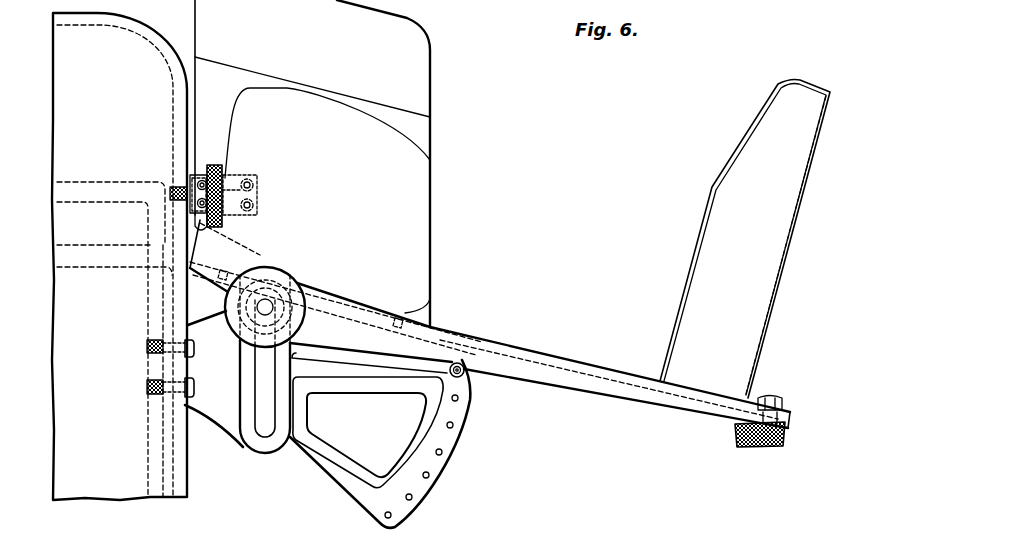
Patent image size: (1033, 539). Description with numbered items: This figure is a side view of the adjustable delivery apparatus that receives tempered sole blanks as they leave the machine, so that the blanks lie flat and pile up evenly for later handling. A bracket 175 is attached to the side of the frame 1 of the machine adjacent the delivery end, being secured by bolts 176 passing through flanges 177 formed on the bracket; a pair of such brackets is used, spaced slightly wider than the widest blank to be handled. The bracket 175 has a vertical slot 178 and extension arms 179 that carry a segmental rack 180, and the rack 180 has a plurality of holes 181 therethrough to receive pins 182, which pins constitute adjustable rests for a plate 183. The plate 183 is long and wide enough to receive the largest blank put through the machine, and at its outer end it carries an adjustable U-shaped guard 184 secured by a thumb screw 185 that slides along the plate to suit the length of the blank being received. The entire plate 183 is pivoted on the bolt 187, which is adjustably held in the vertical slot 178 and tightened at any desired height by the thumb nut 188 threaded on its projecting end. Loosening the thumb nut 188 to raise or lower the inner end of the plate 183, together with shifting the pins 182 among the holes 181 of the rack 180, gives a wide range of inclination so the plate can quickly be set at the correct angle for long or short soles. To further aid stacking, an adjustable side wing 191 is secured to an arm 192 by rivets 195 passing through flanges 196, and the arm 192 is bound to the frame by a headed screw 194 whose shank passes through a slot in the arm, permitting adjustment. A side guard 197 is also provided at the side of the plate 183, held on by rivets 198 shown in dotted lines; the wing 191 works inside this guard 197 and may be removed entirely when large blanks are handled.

The frame 1 is at (83, 487).
The brackets 175 is at (212, 405).
The bolts 176 is at (192, 348).
The flanges 177 is at (177, 398).
The vertical slot 178 is at (266, 430).
The extension arms 179 is at (359, 385).
The segmental rack 180 is at (452, 441).
The holes 181 is at (412, 498).
The pins 182 is at (462, 361).
The plate 183 is at (578, 378).
The U-shaped guard 184 is at (753, 307).
The thumb screw 185 is at (760, 448).
The bolt 187 is at (268, 306).
The thumb nut 188 is at (271, 272).
The side wings 191 is at (417, 130).
The arm 192 is at (190, 206).
The headed screw 194 is at (215, 165).
The rivets 195 is at (258, 206).
The flanges 196 is at (236, 176).
The side guard 197 is at (412, 257).
The rivets 198 is at (393, 323).